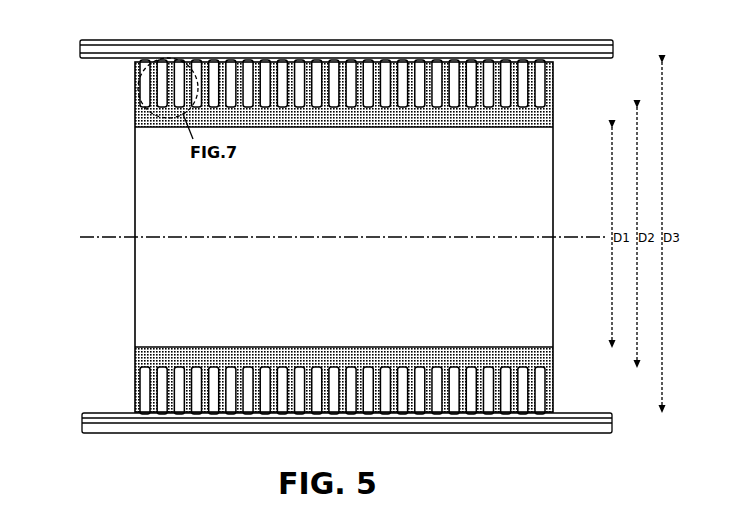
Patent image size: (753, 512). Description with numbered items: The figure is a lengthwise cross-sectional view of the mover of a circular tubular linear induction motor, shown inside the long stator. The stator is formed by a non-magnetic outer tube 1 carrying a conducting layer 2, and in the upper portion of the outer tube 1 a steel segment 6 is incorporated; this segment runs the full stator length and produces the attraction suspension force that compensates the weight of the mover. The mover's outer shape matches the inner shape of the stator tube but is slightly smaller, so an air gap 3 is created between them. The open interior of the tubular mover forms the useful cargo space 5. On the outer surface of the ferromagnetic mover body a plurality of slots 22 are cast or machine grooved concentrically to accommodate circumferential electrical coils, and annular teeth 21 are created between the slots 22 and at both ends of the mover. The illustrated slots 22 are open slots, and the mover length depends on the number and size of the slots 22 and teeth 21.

The non-magnetic outer tube 1 is at (80, 41).
The conducting layer 2 is at (80, 57).
The air gap 3 is at (134, 62).
The cargo space 5 is at (173, 287).
The steel segment 6 is at (80, 49).
The teeth 21 is at (168, 101).
The slots 22 is at (160, 83).